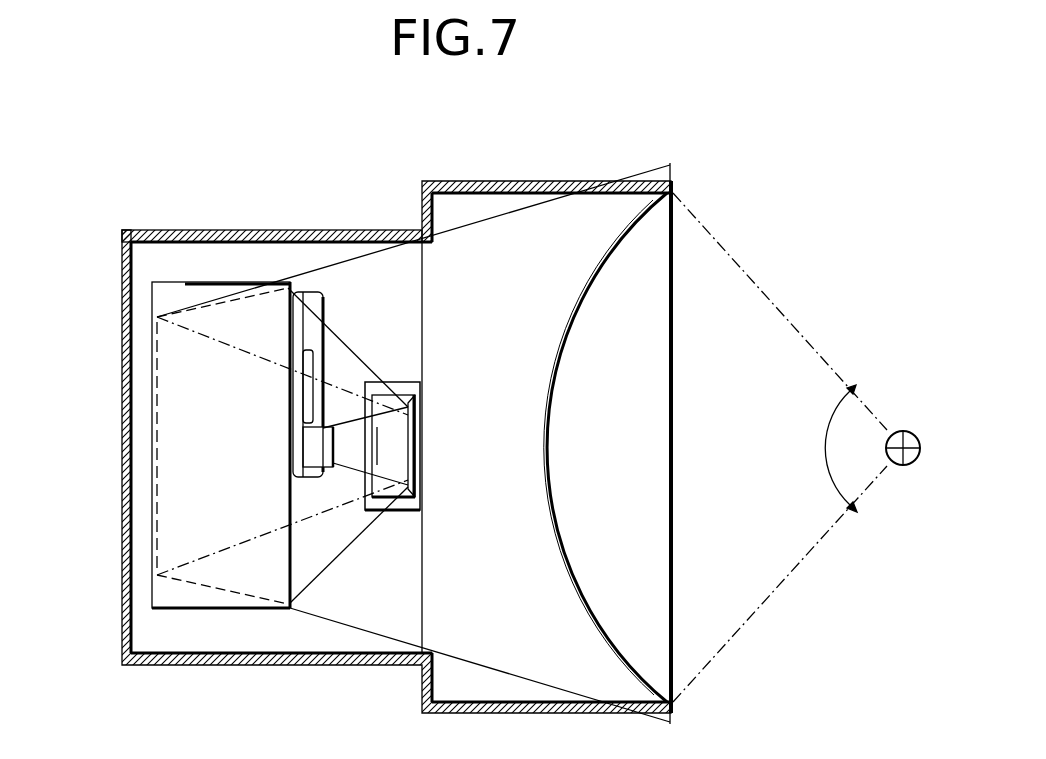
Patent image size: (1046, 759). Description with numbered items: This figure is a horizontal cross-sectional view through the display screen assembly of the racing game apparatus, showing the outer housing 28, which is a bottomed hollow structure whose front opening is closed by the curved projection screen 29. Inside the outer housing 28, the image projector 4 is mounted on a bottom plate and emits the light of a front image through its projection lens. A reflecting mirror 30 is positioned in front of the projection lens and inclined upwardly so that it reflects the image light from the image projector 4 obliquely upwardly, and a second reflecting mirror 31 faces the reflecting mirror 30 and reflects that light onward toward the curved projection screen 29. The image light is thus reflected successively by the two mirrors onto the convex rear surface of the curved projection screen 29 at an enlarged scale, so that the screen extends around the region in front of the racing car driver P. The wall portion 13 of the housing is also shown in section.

The image projector 4 is at (307, 478).
The housing 13 is at (277, 230).
The outer housing 28 is at (122, 400).
The curved projection screen 29 is at (562, 365).
The reflecting mirror 30 is at (392, 445).
The reflecting mirror 31 is at (218, 440).
The racing car driver P is at (903, 431).